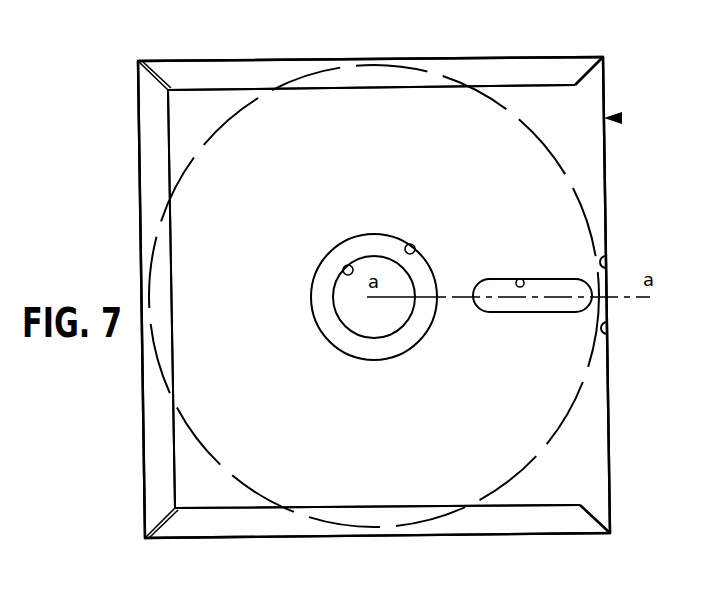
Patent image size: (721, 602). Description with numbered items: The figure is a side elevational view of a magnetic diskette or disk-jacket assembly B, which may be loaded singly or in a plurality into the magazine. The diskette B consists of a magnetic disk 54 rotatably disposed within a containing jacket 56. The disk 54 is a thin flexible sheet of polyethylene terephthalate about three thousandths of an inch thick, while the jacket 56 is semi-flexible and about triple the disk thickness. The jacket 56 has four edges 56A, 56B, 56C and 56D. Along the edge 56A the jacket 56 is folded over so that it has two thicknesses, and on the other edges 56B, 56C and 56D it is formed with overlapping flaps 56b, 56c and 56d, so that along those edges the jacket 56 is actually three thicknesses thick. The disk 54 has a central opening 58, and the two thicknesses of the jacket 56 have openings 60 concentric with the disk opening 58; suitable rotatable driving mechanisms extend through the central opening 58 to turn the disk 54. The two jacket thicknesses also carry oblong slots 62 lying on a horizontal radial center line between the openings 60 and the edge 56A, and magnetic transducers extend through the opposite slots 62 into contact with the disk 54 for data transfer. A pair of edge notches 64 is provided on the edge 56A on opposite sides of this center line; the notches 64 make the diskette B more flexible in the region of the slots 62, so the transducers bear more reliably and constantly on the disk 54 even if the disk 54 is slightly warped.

The magnetic disk 54 is at (374, 296).
The containing jacket 56 is at (410, 297).
The edge 56A is at (644, 295).
The edge 56B is at (370, 38).
The overlapping flap 56b is at (371, 51).
The edge 56C is at (115, 299).
The overlapping flap 56c is at (128, 299).
The edge 56D is at (377, 559).
The overlapping flap 56d is at (377, 544).
The central opening 58 is at (345, 266).
The openings 60 is at (414, 245).
The oblong slots 62 is at (521, 279).
The edge notches 64 is at (639, 292).
The magnetic diskette or disk-jacket assembly B is at (638, 118).